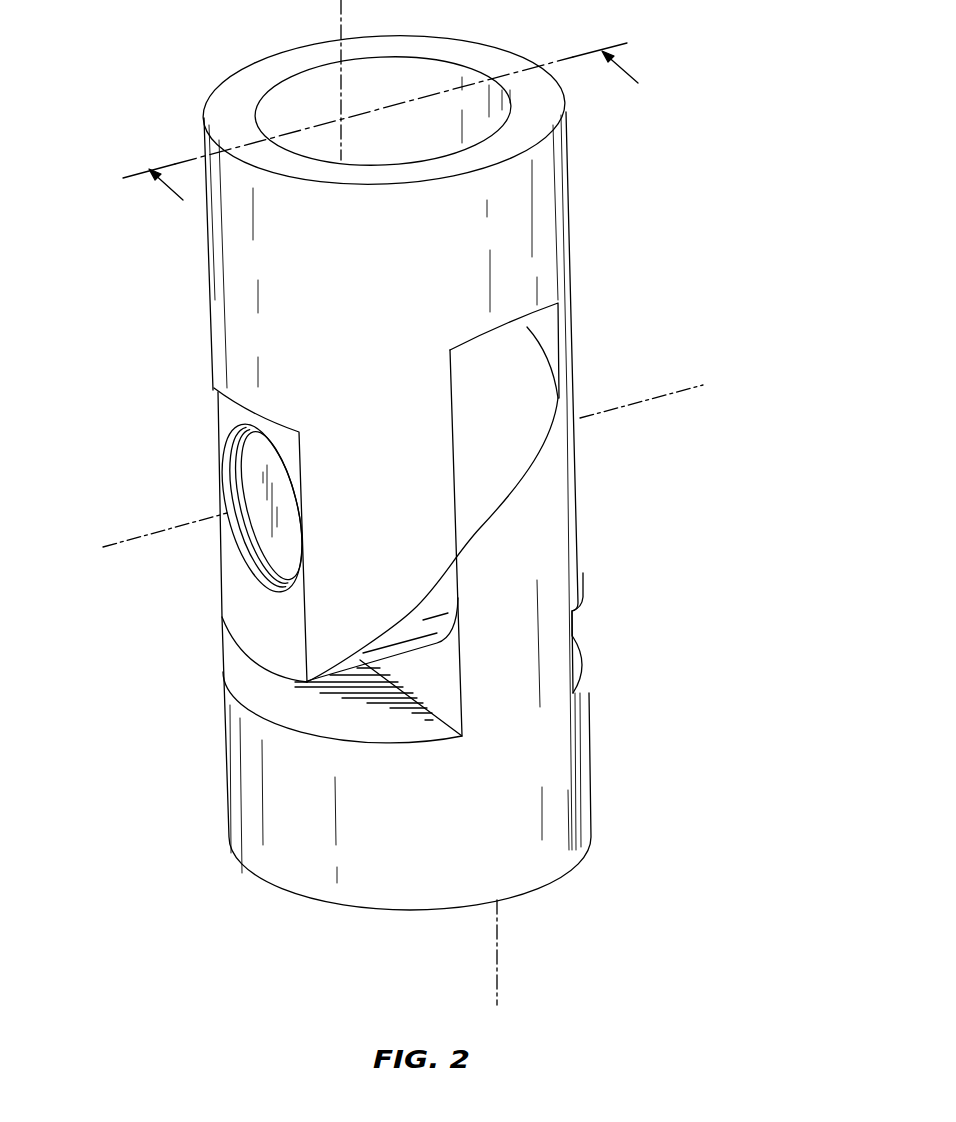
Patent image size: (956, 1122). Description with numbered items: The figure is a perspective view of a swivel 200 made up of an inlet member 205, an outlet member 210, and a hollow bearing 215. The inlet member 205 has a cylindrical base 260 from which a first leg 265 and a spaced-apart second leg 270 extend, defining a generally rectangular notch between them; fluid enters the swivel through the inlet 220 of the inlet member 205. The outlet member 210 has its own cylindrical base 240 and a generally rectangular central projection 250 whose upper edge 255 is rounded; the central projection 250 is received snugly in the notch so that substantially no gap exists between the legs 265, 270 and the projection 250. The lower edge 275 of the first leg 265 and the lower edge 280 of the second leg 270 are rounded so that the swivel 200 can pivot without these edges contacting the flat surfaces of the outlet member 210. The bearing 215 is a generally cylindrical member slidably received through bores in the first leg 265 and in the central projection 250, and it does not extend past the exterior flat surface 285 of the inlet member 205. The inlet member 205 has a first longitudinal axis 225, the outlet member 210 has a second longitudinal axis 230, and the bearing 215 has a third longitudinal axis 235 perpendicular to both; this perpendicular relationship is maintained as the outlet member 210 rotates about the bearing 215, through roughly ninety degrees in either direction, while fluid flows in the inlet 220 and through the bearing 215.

The swivel 200 is at (700, 238).
The inlet member 205 is at (185, 332).
The outlet member 210 is at (250, 903).
The hollow bearing 215 is at (260, 493).
The inlet 220 is at (283, 115).
The first longitudinal axis 225 is at (340, 102).
The second longitudinal axis 230 is at (497, 937).
The third longitudinal axis 235 is at (660, 400).
The cylindrical base 240 is at (557, 760).
The central projection 250 is at (518, 605).
The upper edge 255 is at (482, 395).
The cylindrical base 260 is at (548, 207).
The first leg 265 is at (283, 643).
The second leg 270 is at (576, 345).
The lower edge 275 is at (360, 660).
The lower edge 280 is at (573, 612).
The exterior flat surface 285 is at (220, 405).